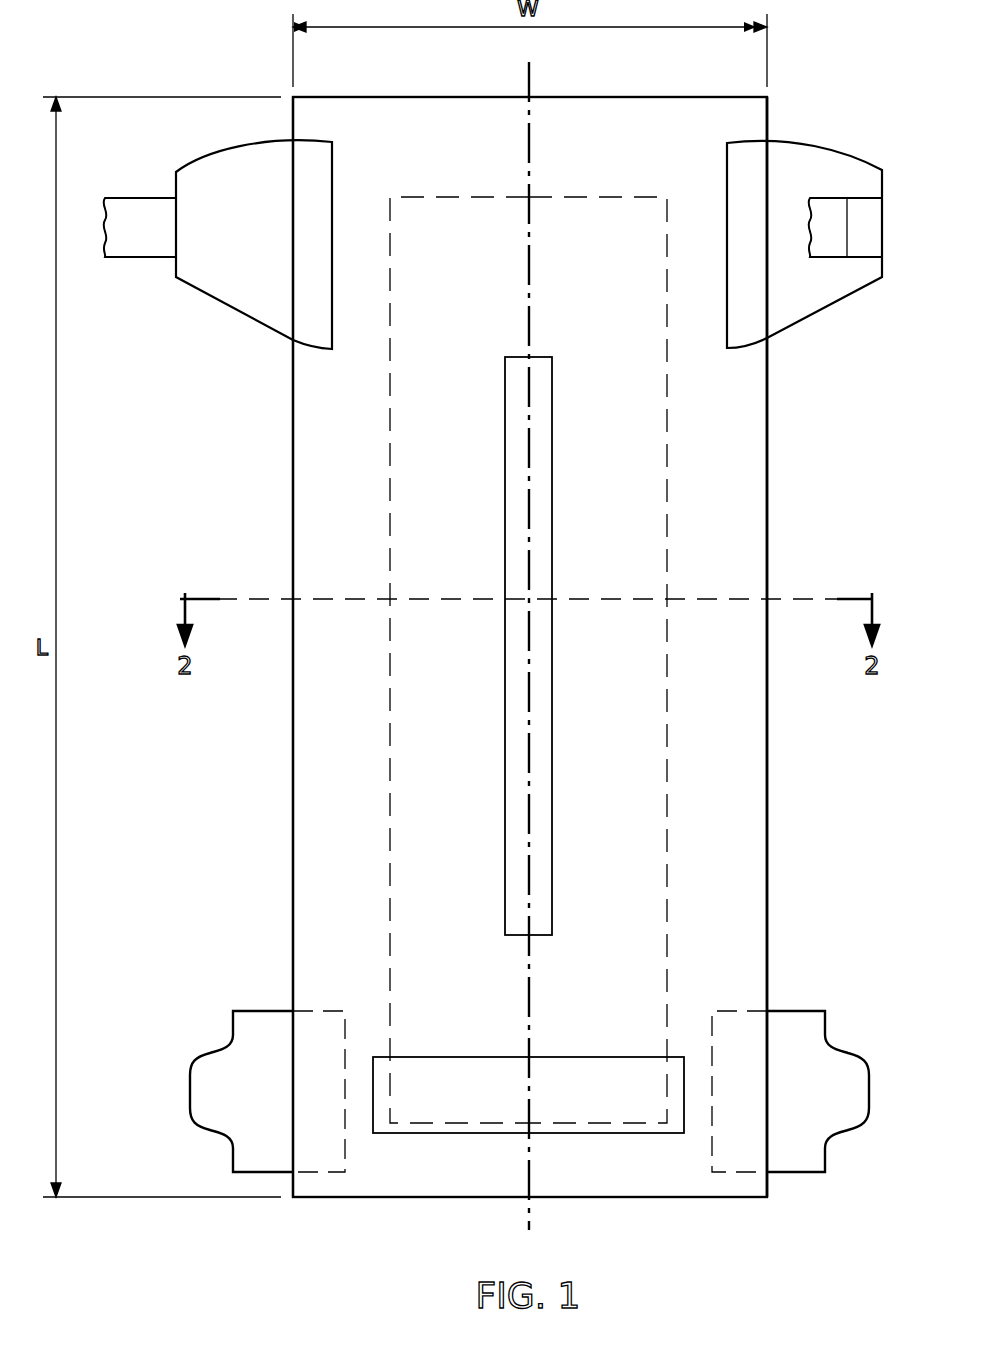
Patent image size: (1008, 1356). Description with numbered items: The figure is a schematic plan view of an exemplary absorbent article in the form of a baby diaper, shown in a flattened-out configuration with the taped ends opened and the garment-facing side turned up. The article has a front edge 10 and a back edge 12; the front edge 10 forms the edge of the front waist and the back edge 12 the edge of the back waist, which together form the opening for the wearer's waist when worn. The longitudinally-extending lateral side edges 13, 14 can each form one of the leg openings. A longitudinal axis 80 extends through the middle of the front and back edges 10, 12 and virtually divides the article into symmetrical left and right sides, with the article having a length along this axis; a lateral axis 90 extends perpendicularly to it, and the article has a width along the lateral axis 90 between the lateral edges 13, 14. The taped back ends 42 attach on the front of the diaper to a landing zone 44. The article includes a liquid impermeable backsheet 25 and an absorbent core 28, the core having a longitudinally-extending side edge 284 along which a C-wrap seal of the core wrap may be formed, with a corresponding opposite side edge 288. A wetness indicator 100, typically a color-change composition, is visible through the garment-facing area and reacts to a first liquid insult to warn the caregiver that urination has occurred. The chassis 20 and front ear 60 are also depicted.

The front edge 10 is at (483, 1198).
The back edge 12 is at (574, 97).
The lateral side edge 13 is at (293, 743).
The lateral side edge 14 is at (767, 538).
The chassis 20 is at (306, 1228).
The liquid impermeable backsheet 25 is at (403, 107).
The absorbent core 28 is at (479, 1134).
The taped back ends 42 is at (144, 207).
The landing zone 44 is at (385, 1135).
The front ear 60 is at (204, 283).
The longitudinal axis 80 is at (533, 1207).
The lateral axis 90 is at (796, 601).
The wetness indicator 100 is at (544, 450).
The longitudinally-extending side edge of the core 284 is at (390, 870).
The second side of absorbent core 288 is at (667, 815).